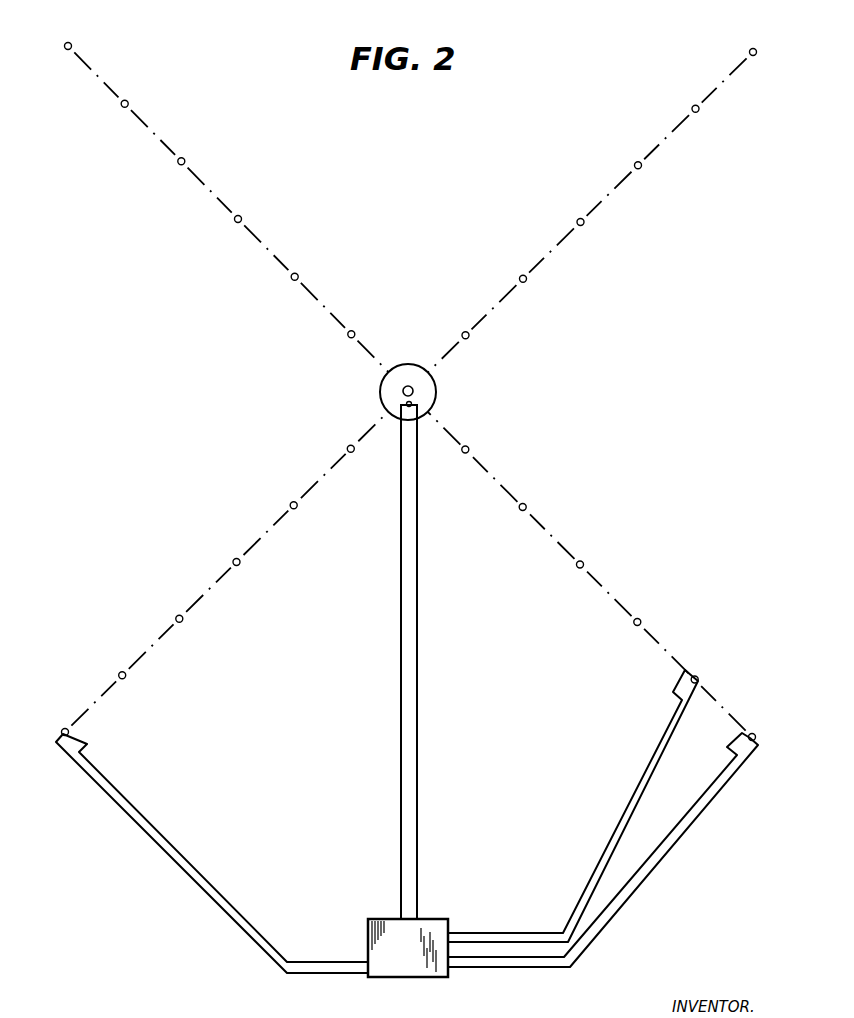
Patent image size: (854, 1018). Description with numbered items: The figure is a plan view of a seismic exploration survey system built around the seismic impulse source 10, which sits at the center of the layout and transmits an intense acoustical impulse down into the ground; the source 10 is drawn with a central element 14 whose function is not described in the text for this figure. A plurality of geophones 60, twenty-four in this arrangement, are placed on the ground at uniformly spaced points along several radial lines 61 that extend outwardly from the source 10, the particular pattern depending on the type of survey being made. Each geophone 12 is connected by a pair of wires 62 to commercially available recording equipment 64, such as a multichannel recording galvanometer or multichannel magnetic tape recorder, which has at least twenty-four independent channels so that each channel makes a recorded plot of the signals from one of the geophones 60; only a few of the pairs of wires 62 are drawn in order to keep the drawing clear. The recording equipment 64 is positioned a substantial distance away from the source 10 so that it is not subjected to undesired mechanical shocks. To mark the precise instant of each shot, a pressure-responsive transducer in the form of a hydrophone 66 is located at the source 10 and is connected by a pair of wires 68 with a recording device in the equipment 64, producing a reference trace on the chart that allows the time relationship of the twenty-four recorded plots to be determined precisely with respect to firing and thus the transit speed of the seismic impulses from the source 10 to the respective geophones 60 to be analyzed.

The seismic impulse source 10 is at (450, 375).
The geophone 12 is at (381, 378).
The repeater center element 14 is at (408, 386).
The geophones 60 is at (128, 104).
The radial lines 61 is at (208, 191).
The pairs of wires 62 is at (212, 884).
The recording equipment 64 is at (433, 927).
The hydrophone 66 is at (406, 403).
The pair of wires 68 is at (419, 737).